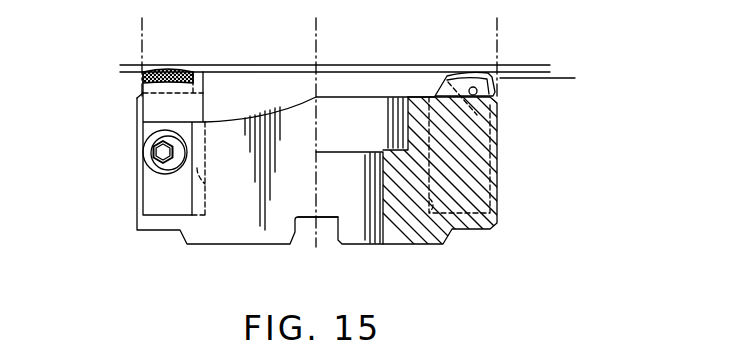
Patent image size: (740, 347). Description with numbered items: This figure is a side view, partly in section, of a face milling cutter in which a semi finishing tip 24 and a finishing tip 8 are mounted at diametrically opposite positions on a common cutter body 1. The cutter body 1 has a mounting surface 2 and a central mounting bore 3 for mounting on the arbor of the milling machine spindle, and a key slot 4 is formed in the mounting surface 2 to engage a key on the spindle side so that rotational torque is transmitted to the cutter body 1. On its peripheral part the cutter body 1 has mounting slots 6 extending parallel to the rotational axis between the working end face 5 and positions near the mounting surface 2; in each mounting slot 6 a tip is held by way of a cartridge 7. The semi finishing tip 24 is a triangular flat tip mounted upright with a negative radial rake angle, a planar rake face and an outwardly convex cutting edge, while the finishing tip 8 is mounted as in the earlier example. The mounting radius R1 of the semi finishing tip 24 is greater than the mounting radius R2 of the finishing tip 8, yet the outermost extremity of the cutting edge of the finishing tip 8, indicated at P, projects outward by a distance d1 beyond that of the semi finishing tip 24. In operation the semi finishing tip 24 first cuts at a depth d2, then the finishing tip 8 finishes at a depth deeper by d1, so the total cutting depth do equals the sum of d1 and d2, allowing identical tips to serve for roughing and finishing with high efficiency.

The cutter body 1 is at (497, 183).
The mounting surface 2 is at (155, 151).
The mounting bore 3 is at (382, 179).
The key slot 4 is at (301, 230).
The working end face 5 is at (418, 95).
The mounting slot 6 is at (207, 187).
The cartridge 7 is at (160, 108).
The finishing tip 8 is at (150, 79).
The semi finishing tip 24 is at (495, 87).
The cutting point P is at (168, 69).
The mounting radius of the semi finishing tip R1 is at (316, 35).
The mounting radius of the finishing tip R2 is at (143, 35).
The projection distance d1 is at (523, 88).
The cutting depth of the semi finishing tip d2 is at (544, 55).
The total cutting depth do is at (567, 95).